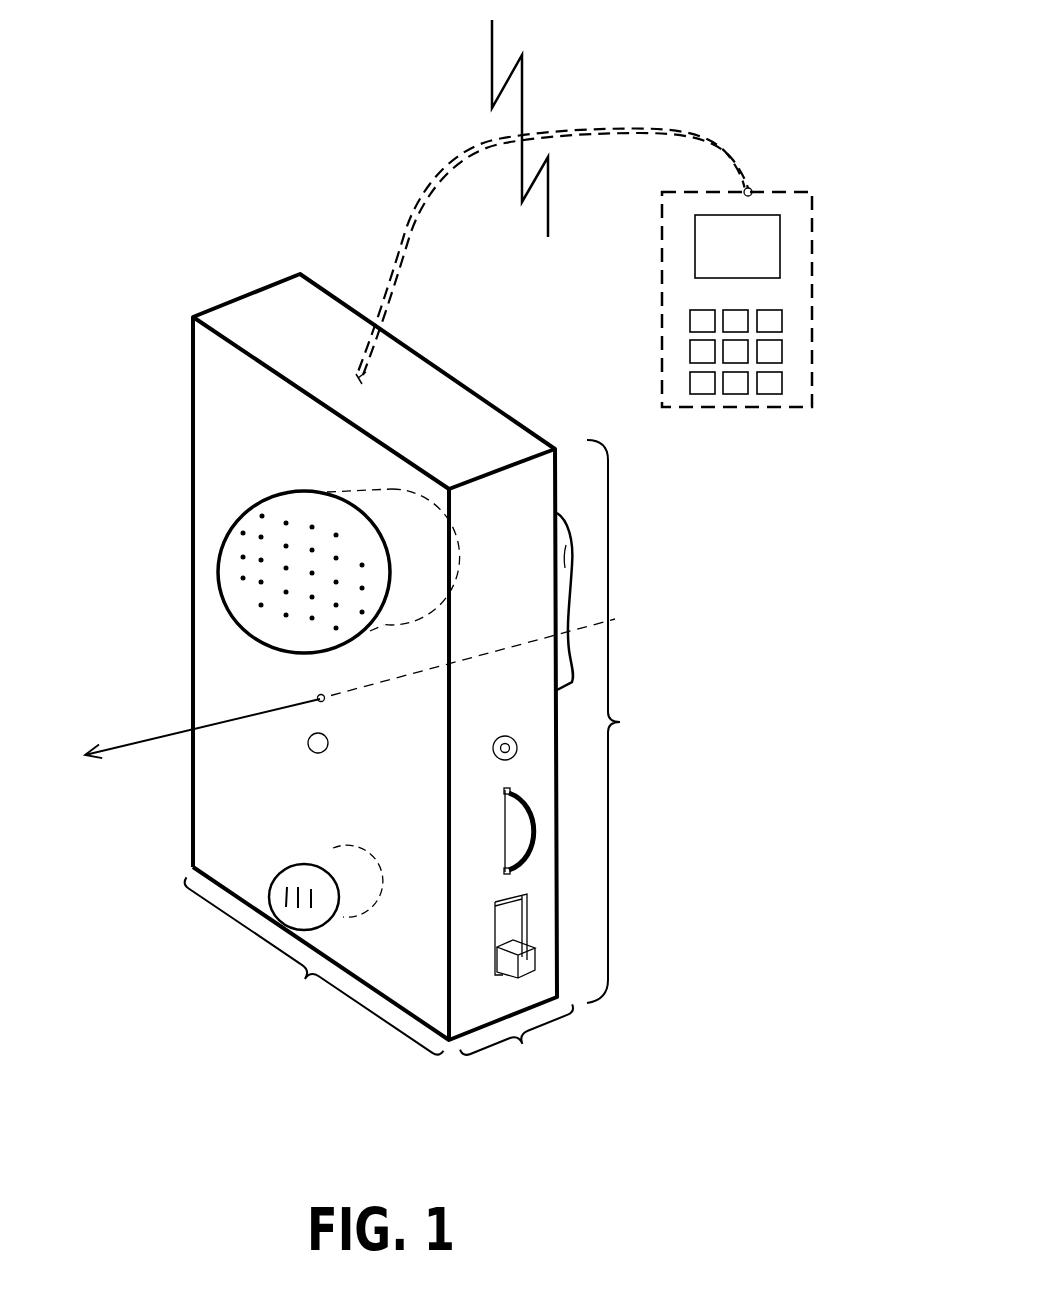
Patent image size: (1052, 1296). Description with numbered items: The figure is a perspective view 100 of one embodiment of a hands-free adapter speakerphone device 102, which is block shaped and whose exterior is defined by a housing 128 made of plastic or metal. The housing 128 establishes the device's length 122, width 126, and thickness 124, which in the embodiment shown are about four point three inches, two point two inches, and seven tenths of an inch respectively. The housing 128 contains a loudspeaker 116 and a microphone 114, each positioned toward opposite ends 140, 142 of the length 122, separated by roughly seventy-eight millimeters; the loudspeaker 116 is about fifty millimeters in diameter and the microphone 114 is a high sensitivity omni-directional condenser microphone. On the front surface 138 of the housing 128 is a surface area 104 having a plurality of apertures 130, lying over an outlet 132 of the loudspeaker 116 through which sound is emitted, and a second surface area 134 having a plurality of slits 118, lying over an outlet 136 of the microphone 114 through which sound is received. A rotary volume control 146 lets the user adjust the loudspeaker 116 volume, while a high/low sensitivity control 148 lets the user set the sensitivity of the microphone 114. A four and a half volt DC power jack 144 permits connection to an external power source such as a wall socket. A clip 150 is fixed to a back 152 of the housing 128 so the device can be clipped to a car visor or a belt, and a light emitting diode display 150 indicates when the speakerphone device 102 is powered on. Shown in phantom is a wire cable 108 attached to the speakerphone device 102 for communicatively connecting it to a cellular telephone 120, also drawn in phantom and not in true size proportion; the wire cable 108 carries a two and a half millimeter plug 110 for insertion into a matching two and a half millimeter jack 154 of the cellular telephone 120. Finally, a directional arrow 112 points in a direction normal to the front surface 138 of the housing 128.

The perspective view 100 is at (72, 28).
The speakerphone device 102 is at (185, 215).
The surface area 104 is at (263, 622).
The wire cable 108 is at (447, 167).
The plug 110 is at (752, 182).
The directional arrow 112 is at (167, 735).
The microphone 114 is at (302, 838).
The loudspeaker 116 is at (460, 518).
The slits 118 is at (283, 895).
The cellular telephone 120 is at (827, 328).
The length 122 is at (642, 721).
The thickness 124 is at (519, 1058).
The width 126 is at (309, 971).
The housing 128 is at (452, 422).
The apertures 130 is at (262, 516).
The outlet 132 is at (393, 580).
The surface area 134 is at (323, 893).
The outlet 136 is at (338, 900).
The front surface 138 is at (220, 768).
The end 140 is at (270, 312).
The end 142 is at (370, 997).
The DC power jack 144 is at (510, 753).
The rotary volume control 146 is at (532, 843).
The high/low sensitivity control 148 is at (525, 958).
The clip 150 is at (327, 737).
The back 152 is at (560, 743).
The jack 154 is at (752, 198).